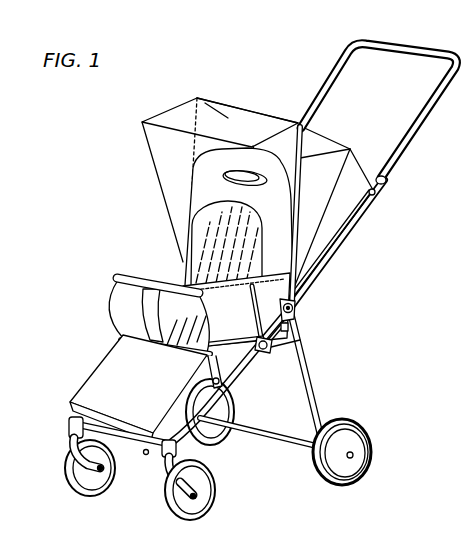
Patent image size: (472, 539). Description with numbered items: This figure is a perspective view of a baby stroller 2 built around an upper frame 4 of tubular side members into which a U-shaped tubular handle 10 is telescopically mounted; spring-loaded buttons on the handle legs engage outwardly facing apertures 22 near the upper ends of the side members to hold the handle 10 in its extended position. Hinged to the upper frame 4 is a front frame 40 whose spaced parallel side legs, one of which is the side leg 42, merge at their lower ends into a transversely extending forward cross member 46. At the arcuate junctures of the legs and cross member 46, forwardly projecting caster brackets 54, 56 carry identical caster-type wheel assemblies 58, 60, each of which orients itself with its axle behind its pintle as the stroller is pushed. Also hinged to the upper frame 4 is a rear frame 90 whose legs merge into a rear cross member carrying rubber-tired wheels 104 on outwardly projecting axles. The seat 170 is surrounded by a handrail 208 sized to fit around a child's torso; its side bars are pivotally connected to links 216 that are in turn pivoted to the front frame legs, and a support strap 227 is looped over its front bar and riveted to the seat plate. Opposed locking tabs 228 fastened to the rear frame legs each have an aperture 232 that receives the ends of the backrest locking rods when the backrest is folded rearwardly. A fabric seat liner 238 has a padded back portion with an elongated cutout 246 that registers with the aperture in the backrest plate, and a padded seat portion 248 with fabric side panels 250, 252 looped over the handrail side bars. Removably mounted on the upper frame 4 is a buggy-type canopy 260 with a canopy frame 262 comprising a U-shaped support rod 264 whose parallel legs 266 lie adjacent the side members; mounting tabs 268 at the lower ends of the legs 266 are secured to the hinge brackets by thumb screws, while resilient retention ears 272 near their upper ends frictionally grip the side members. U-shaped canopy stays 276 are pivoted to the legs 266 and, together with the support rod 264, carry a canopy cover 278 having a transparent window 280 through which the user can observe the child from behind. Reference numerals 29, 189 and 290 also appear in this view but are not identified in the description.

The baby stroller 2 is at (296, 65).
The upper frame 4 is at (348, 230).
The U-shaped tubular handle 10 is at (410, 45).
The apertures 22 is at (386, 181).
The pivot pin 29 is at (296, 311).
The front frame 40 is at (185, 451).
The side leg 42 is at (462, 315).
The forward cross member 46 is at (146, 455).
The caster bracket 54 is at (200, 475).
The caster bracket 56 is at (68, 426).
The caster-type wheel assembly 58 is at (166, 502).
The caster-type wheel assembly 60 is at (70, 488).
The rear frame 90 is at (318, 392).
The rubber-tired wheels 104 is at (372, 446).
The seat 170 is at (236, 368).
The footrest 189 is at (104, 371).
The handrail 208 is at (117, 278).
The link 216 is at (254, 302).
The support strap 227 is at (142, 307).
The locking tabs 228 is at (233, 398).
The aperture 232 is at (212, 385).
The seat liner 238 is at (187, 230).
The elongated cutout 246 is at (226, 174).
The padded seat portion 248 is at (122, 336).
The fabric side panel 250 is at (302, 344).
The fabric side panel 252 is at (110, 299).
The canopy 260 is at (146, 111).
The canopy frame 262 is at (301, 124).
The U-shaped support rod 264 is at (336, 242).
The legs 266 is at (358, 208).
The mounting tabs 268 is at (296, 304).
The resilient retention ears 272 is at (375, 193).
The U-shaped canopy stays 276 is at (143, 140).
The canopy cover 278 is at (207, 99).
The transparent plastic panel or window 280 is at (312, 118).
The seat back inner panel 290 is at (188, 194).